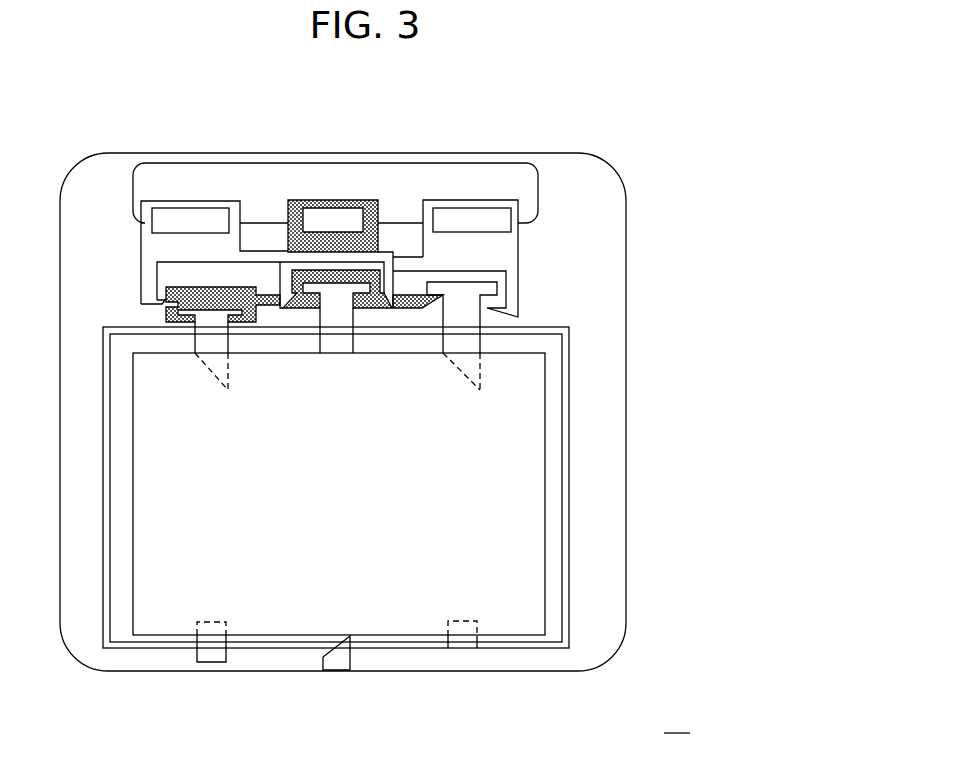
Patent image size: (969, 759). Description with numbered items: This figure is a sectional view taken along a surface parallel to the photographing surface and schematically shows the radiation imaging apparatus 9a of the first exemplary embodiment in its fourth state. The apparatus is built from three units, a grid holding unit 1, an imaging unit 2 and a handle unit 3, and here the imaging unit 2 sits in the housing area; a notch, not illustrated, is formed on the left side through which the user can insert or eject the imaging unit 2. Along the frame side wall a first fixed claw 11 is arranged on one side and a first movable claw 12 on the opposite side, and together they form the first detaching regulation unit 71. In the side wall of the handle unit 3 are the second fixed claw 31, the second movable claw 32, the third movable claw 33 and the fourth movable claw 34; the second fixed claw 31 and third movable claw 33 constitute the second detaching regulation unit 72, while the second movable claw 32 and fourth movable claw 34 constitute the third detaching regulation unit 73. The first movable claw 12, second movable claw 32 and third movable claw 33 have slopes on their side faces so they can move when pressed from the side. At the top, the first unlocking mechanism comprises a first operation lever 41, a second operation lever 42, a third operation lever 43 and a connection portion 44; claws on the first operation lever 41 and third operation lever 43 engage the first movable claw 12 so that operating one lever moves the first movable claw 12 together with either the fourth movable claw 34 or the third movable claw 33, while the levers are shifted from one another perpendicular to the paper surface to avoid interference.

The grid holding unit 1 is at (608, 441).
The imaging unit 2 is at (533, 503).
The handle unit 3 is at (395, 412).
The radiation imaging apparatus 9a is at (677, 718).
The first fixed claw 11 is at (463, 637).
The first movable claw 12 is at (210, 370).
The second fixed claw 31 is at (212, 655).
The second movable claw 32 is at (340, 658).
The third movable claw 33 is at (462, 360).
The fourth movable claw 34 is at (338, 318).
The first operation lever 41 is at (210, 202).
The second operation lever 42 is at (437, 202).
The third operation lever 43 is at (290, 202).
The connection portion 44 is at (165, 315).
The first detaching regulation unit 71 is at (334, 529).
The second detaching regulation unit 72 is at (338, 509).
The third detaching regulation unit 73 is at (337, 503).